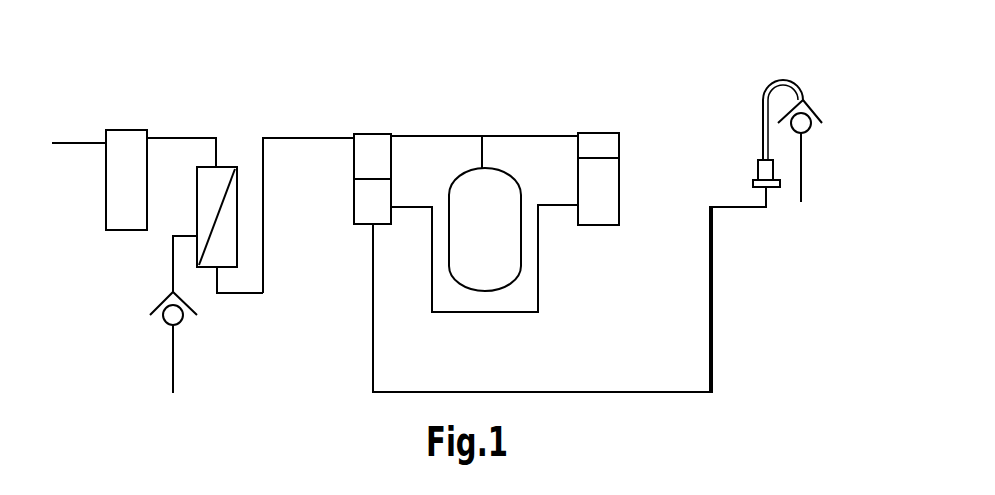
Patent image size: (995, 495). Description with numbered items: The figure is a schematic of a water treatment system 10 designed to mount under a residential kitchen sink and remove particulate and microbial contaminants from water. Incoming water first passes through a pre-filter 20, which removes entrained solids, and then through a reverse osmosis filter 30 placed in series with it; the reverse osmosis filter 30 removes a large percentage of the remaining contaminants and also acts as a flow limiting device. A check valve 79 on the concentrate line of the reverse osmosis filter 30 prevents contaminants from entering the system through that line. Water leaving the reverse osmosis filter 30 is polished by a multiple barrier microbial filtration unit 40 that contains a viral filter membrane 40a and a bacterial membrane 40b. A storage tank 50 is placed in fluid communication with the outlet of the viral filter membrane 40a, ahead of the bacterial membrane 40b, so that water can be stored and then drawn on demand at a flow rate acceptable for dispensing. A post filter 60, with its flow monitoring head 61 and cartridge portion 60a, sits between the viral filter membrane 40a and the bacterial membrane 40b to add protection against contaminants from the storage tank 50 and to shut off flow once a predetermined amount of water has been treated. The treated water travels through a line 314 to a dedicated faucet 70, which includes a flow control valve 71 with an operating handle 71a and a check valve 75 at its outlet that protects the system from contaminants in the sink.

The water treatment system 10 is at (714, 48).
The pre-filter 20 is at (132, 140).
The reverse osmosis filter 30 is at (220, 174).
The multiple barrier microbial filtration unit 40 is at (380, 143).
The viral filter membrane 40a is at (372, 156).
The bacterial membrane 40b is at (372, 201).
The storage tank 50 is at (505, 242).
The post filter 60 is at (610, 167).
The valve port 60a is at (598, 191).
The flow monitoring head 61 is at (598, 145).
The faucet 70 is at (765, 126).
The flow control valve 71 is at (771, 174).
The operating handle 71a is at (757, 157).
The check valve 75 is at (806, 126).
The check valve 79 is at (166, 319).
The line 314 is at (613, 392).